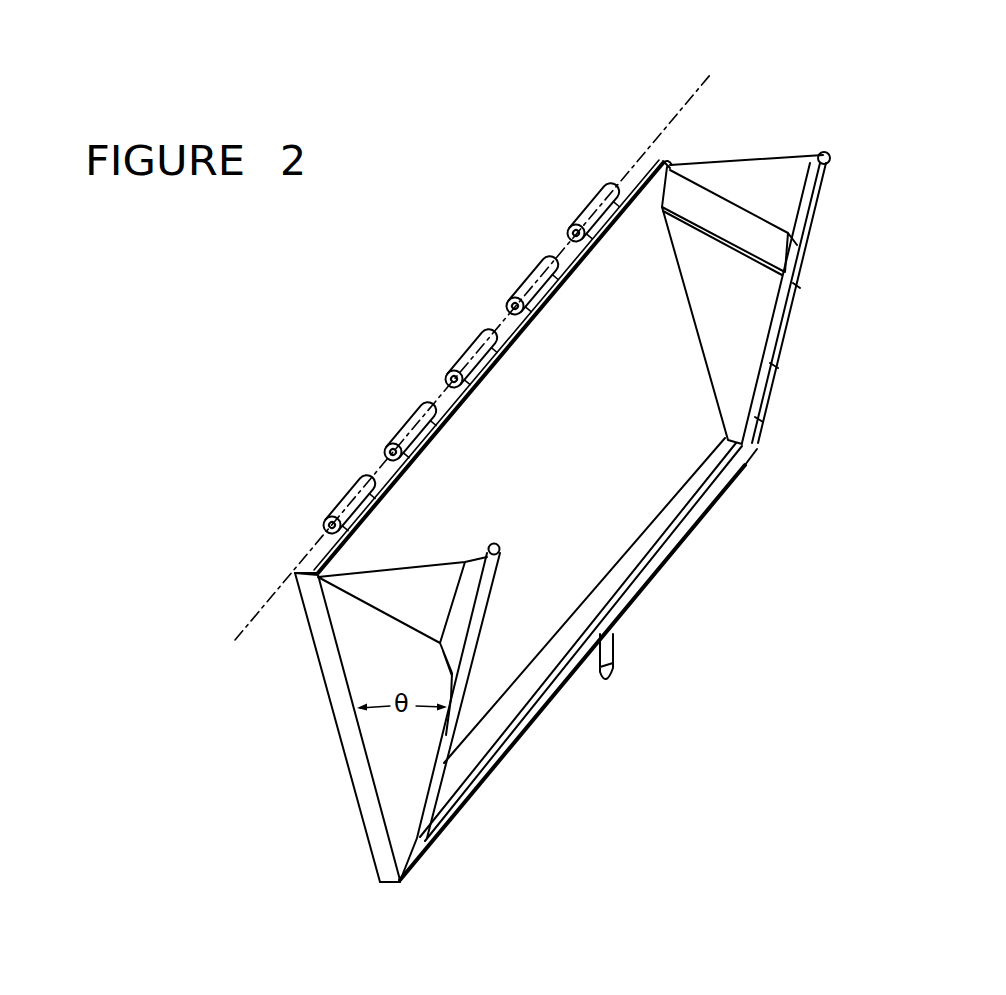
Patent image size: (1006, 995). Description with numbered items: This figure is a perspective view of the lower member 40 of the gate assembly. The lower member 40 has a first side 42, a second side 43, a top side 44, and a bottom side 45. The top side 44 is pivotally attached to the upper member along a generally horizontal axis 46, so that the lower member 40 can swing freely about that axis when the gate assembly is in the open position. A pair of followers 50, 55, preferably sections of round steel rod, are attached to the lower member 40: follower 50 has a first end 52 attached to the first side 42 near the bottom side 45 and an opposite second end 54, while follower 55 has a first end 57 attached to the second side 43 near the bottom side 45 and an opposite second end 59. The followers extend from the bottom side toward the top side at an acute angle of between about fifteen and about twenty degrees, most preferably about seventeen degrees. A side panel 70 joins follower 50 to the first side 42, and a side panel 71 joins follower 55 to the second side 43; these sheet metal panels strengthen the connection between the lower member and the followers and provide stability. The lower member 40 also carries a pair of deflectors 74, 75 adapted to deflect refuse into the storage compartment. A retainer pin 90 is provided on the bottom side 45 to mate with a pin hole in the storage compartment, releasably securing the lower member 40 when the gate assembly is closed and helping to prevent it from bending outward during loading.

The lower member 40 is at (365, 295).
The first side 42 is at (355, 822).
The second side 43 is at (672, 157).
The top side 44 is at (318, 550).
The bottom side 45 is at (508, 767).
The generally horizontal axis 46 is at (663, 132).
The follower 50 is at (474, 656).
The first end 52 is at (418, 838).
The second end 54 is at (500, 551).
The follower 55 is at (812, 243).
The first end 57 is at (757, 422).
The second end 59 is at (823, 175).
The side panel 70 is at (353, 657).
The side panel 71 is at (740, 333).
The deflector 74 is at (395, 587).
The deflector 75 is at (770, 170).
The retainer pin 90 is at (613, 647).